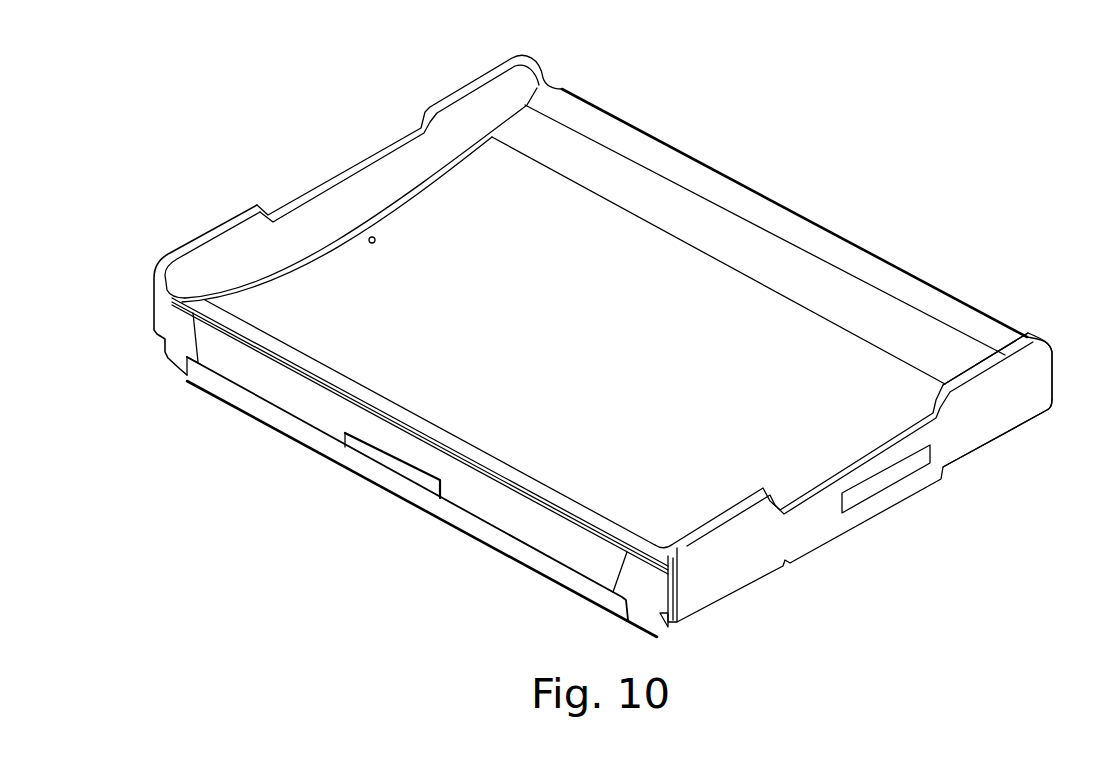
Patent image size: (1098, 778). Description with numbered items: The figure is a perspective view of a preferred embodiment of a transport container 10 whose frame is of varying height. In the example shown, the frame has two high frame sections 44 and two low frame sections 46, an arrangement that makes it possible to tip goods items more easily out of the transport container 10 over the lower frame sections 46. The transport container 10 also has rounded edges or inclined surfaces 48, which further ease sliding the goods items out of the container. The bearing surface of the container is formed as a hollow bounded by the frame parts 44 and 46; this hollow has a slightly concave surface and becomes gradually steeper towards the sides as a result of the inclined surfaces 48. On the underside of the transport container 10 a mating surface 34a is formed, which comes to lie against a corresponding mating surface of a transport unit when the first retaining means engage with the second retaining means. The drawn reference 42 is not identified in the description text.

The transport container 10 is at (619, 358).
The panel 42 is at (630, 246).
The high frame section 44 is at (1003, 393).
The low frame section 46 is at (935, 312).
The inclined surface 48 is at (815, 285).
The mating surface 34a is at (533, 572).